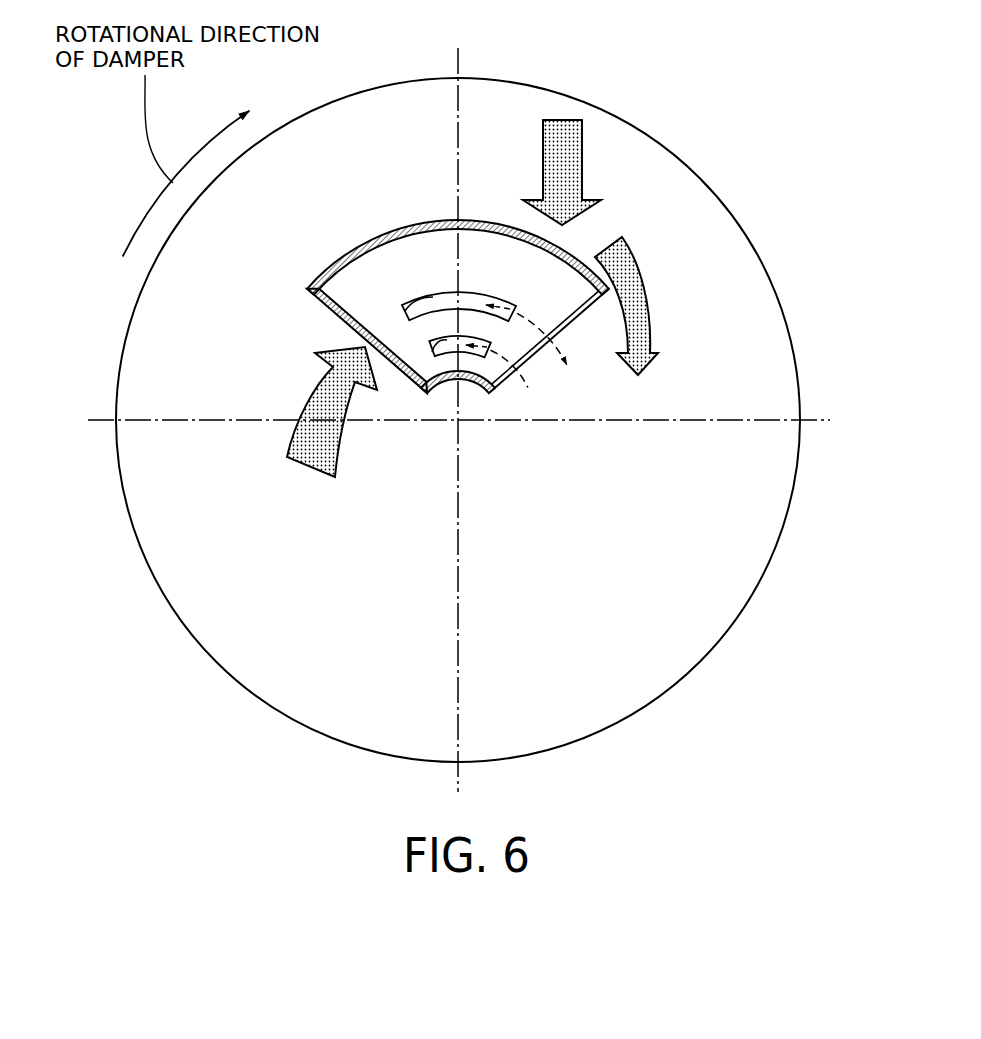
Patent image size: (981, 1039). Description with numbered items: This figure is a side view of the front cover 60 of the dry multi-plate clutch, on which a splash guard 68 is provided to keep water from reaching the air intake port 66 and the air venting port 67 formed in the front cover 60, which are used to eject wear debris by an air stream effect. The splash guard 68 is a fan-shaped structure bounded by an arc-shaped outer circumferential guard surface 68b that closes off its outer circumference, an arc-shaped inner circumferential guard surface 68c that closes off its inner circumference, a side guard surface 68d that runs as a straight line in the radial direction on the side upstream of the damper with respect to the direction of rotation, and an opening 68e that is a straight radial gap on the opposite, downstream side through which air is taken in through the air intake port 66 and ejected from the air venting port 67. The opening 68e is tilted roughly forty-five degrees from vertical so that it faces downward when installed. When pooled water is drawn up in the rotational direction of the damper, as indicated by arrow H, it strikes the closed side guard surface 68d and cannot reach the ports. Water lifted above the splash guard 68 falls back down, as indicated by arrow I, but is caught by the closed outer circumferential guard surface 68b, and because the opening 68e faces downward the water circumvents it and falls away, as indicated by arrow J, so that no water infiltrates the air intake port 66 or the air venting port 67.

The front cover 60 is at (557, 88).
The splash guard 68 is at (414, 321).
The outer circumferential guard surface 68b is at (340, 254).
The inner circumferential guard surface 68c is at (443, 388).
The side guard surface 68d is at (325, 315).
The opening 68e is at (534, 358).
The air venting port 67 is at (417, 304).
The air intake port 66 is at (430, 344).
The arrow H is at (313, 397).
The arrow I is at (582, 160).
The arrow J is at (650, 280).